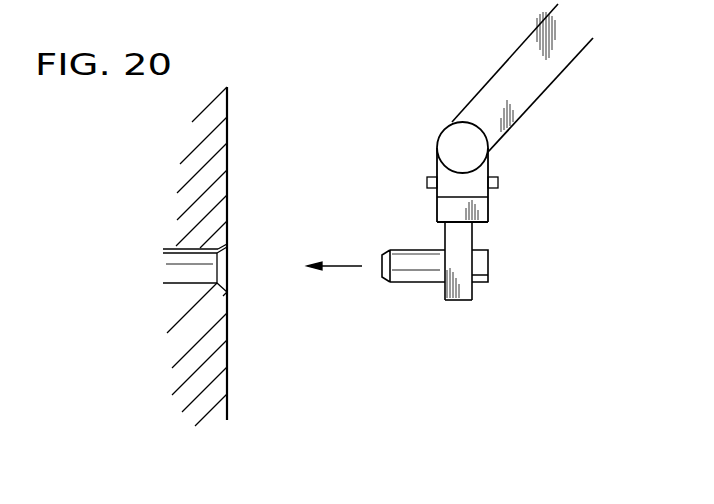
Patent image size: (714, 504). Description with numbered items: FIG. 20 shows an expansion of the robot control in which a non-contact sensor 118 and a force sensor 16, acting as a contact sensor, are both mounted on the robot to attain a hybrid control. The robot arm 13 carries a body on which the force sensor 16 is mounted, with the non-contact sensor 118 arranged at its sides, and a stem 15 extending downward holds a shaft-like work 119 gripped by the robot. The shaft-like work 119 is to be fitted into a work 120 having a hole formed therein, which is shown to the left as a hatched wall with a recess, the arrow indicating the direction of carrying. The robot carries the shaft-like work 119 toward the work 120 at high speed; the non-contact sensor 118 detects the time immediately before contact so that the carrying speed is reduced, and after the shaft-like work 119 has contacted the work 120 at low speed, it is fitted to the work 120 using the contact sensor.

The tubular frame member 13 is at (537, 97).
The stem 15 is at (458, 301).
The force sensor 16 is at (489, 210).
The non-contact sensor 118 is at (427, 182).
The shaft-like work 119 is at (410, 283).
The work having a hole 120 is at (228, 130).